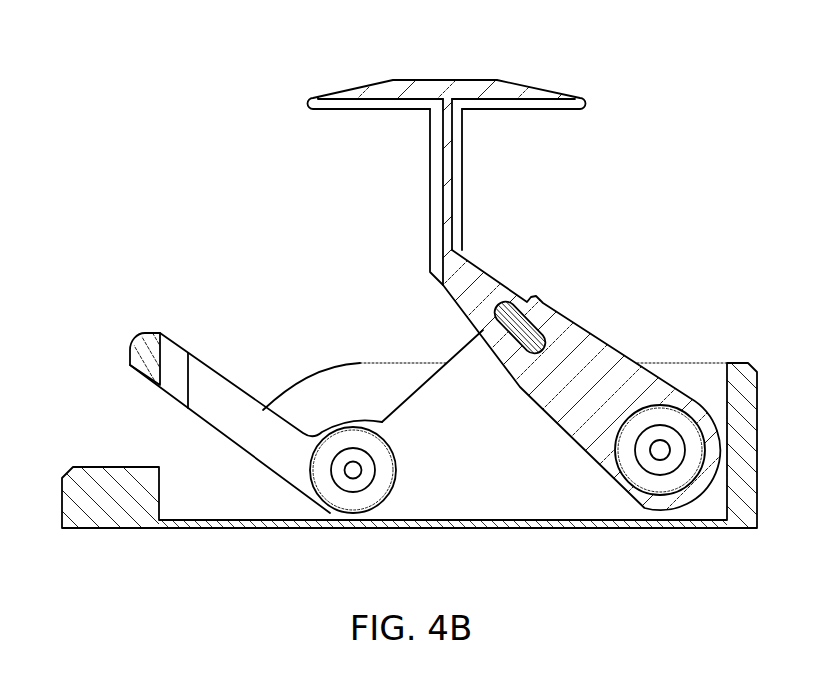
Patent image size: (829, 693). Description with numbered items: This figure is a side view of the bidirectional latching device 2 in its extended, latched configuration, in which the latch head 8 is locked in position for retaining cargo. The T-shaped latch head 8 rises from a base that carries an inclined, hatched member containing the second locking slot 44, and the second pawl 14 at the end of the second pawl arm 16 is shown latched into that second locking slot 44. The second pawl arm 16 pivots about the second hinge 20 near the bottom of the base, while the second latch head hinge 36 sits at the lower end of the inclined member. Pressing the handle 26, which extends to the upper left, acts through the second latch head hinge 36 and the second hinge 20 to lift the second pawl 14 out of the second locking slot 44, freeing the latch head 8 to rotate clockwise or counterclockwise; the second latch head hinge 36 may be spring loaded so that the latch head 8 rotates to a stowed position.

The bidirectional latching device 2 is at (447, 145).
The latch head 8 is at (445, 178).
The second pawl 14 is at (520, 330).
The second pawl arm 16 is at (478, 358).
The second hinge 20 is at (354, 474).
The handle 26 is at (137, 350).
The second latch head hinge 36 is at (661, 455).
The second locking slot 44 is at (538, 342).